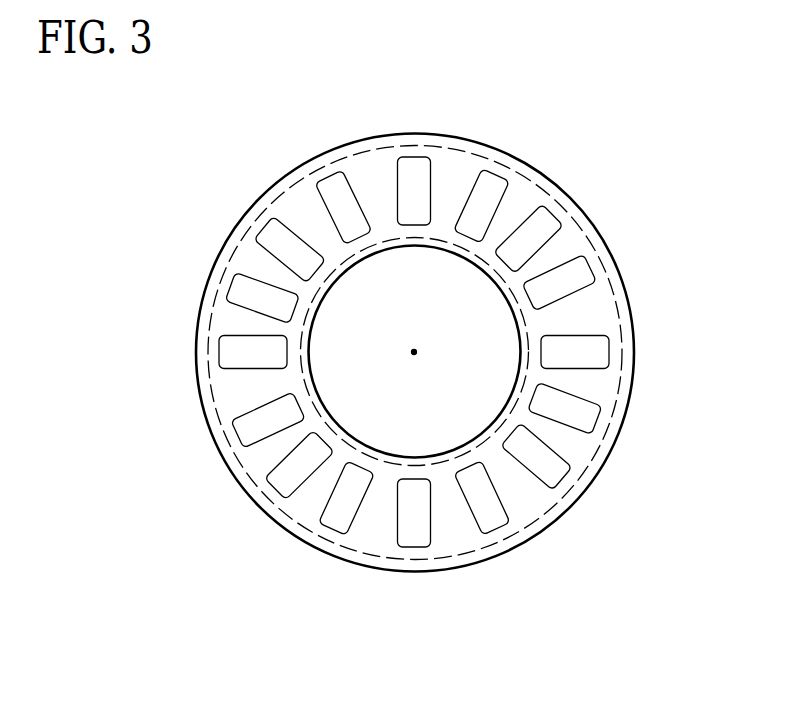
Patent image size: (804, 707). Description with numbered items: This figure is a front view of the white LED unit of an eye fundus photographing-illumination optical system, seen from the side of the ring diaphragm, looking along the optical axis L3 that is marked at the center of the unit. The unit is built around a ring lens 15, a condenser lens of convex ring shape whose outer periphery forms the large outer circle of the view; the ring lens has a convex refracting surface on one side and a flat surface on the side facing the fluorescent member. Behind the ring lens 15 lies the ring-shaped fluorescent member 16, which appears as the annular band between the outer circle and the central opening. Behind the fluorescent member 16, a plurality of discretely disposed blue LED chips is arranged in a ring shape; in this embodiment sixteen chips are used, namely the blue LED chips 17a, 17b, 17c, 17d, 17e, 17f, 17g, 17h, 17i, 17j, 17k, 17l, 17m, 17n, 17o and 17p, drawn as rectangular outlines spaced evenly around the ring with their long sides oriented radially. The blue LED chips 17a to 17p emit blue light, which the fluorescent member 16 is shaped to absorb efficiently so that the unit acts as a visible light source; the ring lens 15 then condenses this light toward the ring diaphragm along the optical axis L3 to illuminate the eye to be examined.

The ring lens 15 is at (597, 477).
The fluorescent member 16 is at (213, 392).
The optical axis L3 is at (416, 351).
The blue LED chip 17a is at (414, 550).
The blue LED chip 17b is at (498, 531).
The blue LED chip 17c is at (565, 481).
The blue LED chip 17d is at (599, 421).
The blue LED chip 17e is at (612, 352).
The blue LED chip 17f is at (593, 267).
The blue LED chip 17g is at (555, 213).
The blue LED chip 17h is at (497, 172).
The blue LED chip 17i is at (414, 154).
The blue LED chip 17j is at (327, 174).
The blue LED chip 17k is at (261, 226).
The blue LED chip 17l is at (227, 286).
The blue LED chip 17m is at (216, 352).
The blue LED chip 17n is at (235, 436).
The blue LED chip 17o is at (273, 491).
The blue LED chip 17p is at (331, 532).